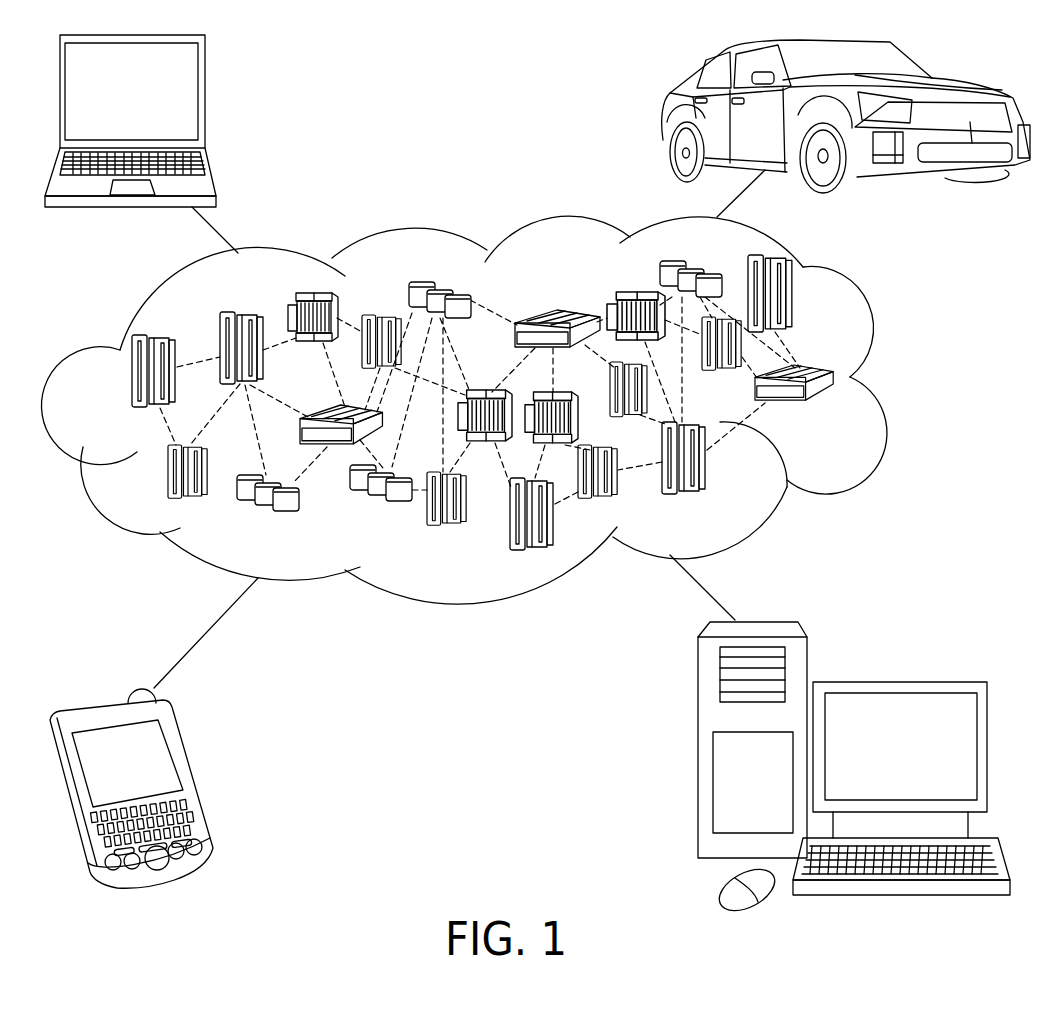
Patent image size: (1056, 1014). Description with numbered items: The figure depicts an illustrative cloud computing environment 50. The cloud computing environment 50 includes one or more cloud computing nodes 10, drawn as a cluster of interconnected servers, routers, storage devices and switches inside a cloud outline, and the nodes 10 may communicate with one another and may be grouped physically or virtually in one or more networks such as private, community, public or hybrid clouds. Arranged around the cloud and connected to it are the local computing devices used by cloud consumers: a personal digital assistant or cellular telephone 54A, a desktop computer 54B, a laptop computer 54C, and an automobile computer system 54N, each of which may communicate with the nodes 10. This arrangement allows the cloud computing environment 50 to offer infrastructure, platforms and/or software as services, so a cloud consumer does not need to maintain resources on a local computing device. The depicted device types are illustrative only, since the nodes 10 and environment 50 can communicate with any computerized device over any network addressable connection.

The cloud computing nodes 10 is at (845, 416).
The cloud computing environment 50 is at (898, 380).
The personal digital assistant or cellular telephone 54A is at (195, 777).
The desktop computer 54B is at (897, 682).
The laptop computer 54C is at (205, 97).
The automobile computer system 54N is at (667, 118).